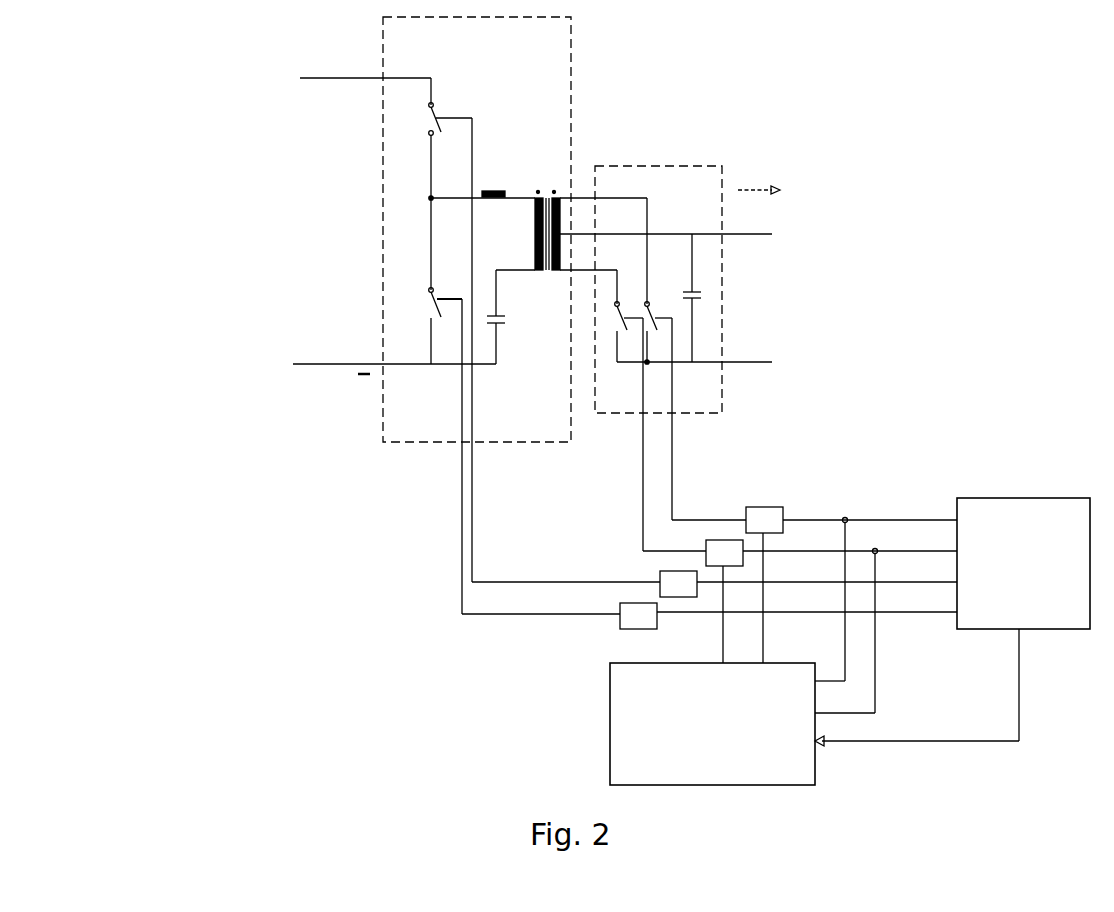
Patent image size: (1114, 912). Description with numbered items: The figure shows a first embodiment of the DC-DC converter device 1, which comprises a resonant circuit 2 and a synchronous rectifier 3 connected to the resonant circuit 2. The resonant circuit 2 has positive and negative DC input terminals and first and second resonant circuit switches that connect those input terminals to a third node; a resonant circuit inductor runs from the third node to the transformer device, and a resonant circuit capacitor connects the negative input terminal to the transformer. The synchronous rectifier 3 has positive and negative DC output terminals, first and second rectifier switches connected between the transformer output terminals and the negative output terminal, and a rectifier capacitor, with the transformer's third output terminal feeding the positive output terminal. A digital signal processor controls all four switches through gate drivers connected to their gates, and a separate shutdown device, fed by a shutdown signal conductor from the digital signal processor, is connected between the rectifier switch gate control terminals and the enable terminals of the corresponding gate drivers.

The DC-DC converter device 1 is at (165, 88).
The resonant circuit 2 is at (427, 413).
The synchronous rectifier 3 is at (701, 210).